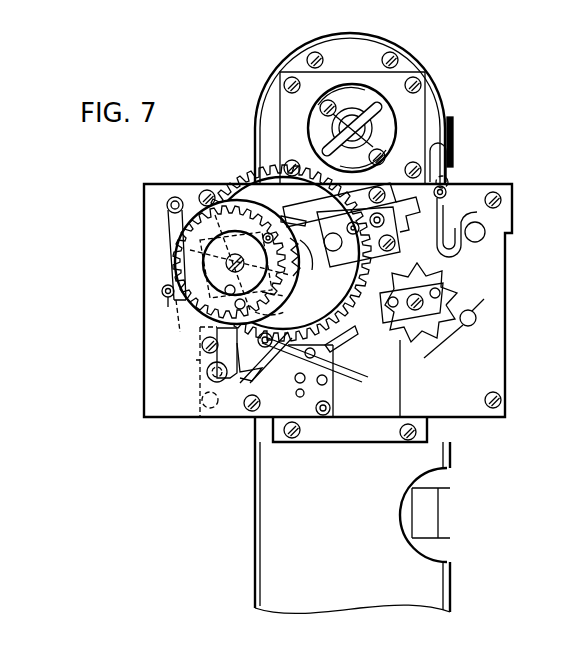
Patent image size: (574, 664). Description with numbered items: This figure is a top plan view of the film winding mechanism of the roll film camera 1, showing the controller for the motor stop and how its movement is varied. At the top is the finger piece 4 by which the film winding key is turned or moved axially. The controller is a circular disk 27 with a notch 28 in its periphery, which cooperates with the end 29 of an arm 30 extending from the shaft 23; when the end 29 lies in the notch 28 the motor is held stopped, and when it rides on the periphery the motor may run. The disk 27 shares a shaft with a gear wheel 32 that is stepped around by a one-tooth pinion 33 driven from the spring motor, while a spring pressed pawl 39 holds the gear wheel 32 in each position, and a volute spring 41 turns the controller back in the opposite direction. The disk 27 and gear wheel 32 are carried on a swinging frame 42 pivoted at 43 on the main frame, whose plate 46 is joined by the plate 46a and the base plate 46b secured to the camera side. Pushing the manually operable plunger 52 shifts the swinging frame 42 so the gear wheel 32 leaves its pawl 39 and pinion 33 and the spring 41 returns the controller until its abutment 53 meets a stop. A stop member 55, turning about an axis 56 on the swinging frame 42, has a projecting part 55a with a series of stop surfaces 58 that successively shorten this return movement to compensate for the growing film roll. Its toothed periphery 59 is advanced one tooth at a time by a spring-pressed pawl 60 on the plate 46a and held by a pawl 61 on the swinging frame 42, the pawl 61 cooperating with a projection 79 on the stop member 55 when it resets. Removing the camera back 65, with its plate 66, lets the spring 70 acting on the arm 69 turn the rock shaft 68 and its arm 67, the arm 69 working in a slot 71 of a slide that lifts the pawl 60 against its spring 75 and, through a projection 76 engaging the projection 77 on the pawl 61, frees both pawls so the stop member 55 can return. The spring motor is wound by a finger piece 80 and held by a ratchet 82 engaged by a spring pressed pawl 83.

The roll film camera 1 is at (256, 532).
The finger piece 4 is at (368, 112).
The shaft 23 is at (388, 402).
The controlling disk 27 is at (266, 233).
The notch 28 is at (287, 293).
The end of arm 29 is at (282, 313).
The arm 30 is at (321, 414).
The gear wheel 32 is at (250, 197).
The one-tooth pinion 33 is at (241, 385).
The spring pressed pawl 39 is at (342, 337).
The volute spring 41 is at (306, 272).
The swinging frame 42 is at (340, 190).
The pivot 43 is at (392, 197).
The plate of main frame 46 is at (492, 348).
The plate of main frame 46a is at (152, 362).
The base plate 46b is at (358, 432).
The manually operable plunger 52 is at (208, 380).
The abutment or stop 53 is at (213, 190).
The stop member 55 is at (185, 305).
The projecting part 55a is at (213, 327).
The axis 56 is at (239, 270).
The stop surfaces 58 is at (252, 348).
The toothed periphery 59 is at (161, 283).
The spring-pressed pawl 60 is at (166, 208).
The spring-pressed pawl 61 is at (347, 229).
The camera back 65 is at (450, 523).
The plate 66 is at (456, 130).
The arm 67 is at (448, 163).
The rock shaft 68 is at (447, 190).
The arm 69 is at (447, 205).
The spring 70 is at (478, 216).
The slot 71 is at (452, 229).
The spring 75 is at (172, 252).
The projection 76 is at (415, 283).
The projection 77 is at (410, 311).
The projection 79 is at (311, 229).
The finger piece 80 is at (440, 287).
The ratchet 82 is at (447, 298).
The spring pressed pawl 83 is at (454, 339).